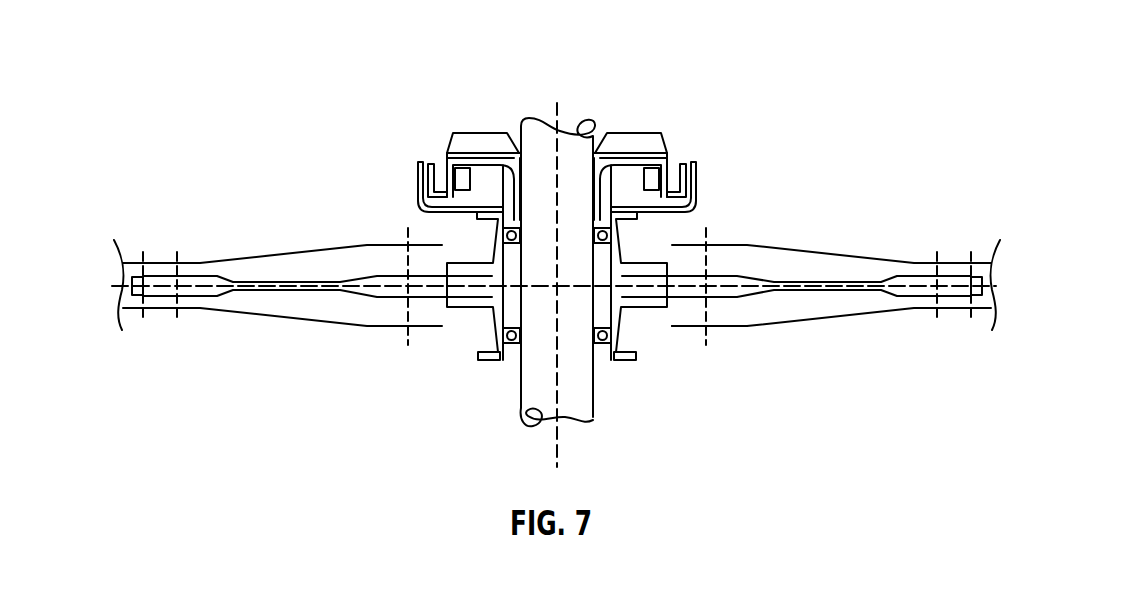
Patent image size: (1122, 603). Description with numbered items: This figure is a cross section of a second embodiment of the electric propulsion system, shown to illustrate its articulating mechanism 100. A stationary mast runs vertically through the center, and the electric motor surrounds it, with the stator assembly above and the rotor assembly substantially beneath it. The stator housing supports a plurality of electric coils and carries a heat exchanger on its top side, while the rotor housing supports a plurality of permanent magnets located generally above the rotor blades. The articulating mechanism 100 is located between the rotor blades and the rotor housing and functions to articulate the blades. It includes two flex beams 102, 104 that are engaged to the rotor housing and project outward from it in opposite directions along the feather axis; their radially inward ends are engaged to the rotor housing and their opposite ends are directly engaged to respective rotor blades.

The articulating mechanism 100 is at (809, 242).
The flex beam 102 is at (803, 307).
The flex beam 104 is at (295, 304).